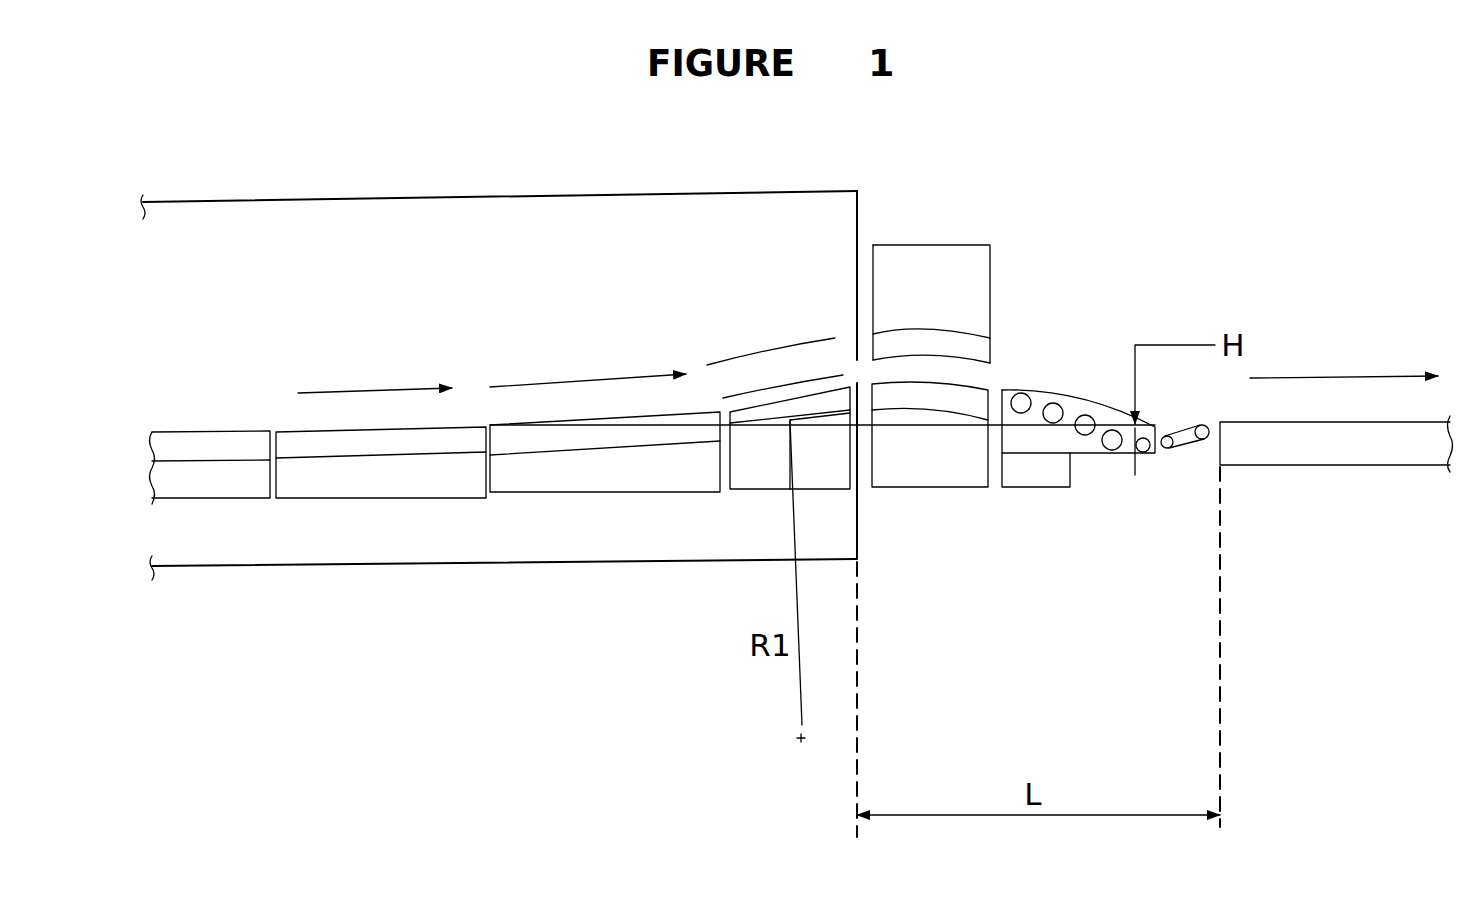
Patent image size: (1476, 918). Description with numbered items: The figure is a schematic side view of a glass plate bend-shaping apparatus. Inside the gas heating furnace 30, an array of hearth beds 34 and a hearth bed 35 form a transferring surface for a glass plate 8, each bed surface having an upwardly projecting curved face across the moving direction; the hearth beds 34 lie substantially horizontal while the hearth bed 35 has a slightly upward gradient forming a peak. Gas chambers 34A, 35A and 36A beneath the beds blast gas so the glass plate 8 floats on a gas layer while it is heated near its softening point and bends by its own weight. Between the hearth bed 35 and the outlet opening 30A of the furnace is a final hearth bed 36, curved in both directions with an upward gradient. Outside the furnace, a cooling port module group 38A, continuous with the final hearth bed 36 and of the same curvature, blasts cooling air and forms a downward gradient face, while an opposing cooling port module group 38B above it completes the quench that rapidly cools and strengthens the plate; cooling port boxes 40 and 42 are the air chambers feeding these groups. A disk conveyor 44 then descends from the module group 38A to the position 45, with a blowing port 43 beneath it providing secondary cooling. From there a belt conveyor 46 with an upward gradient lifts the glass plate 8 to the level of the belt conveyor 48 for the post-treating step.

The glass plate 8 is at (773, 383).
The gas heating furnace 30 is at (542, 215).
The exit or outlet opening 30A is at (860, 366).
The hearth beds 34 is at (200, 448).
The gas chambers 34A is at (242, 482).
The hearth bed 35 is at (560, 438).
The gas chamber 35A is at (650, 473).
The final hearth bed 36 is at (753, 413).
The gas chamber 36A is at (822, 468).
The cooling port module group 38A is at (973, 388).
The cooling port module group 38B is at (967, 347).
The cooling port box 40 is at (967, 263).
The cooling port box 42 is at (917, 468).
The blowing port 43 is at (1028, 468).
The disk conveyor 44 is at (1055, 442).
The downstream end position of disk conveyor 45 is at (1160, 430).
The belt conveyor 46 is at (1187, 445).
The belt conveyor 48 is at (1328, 447).